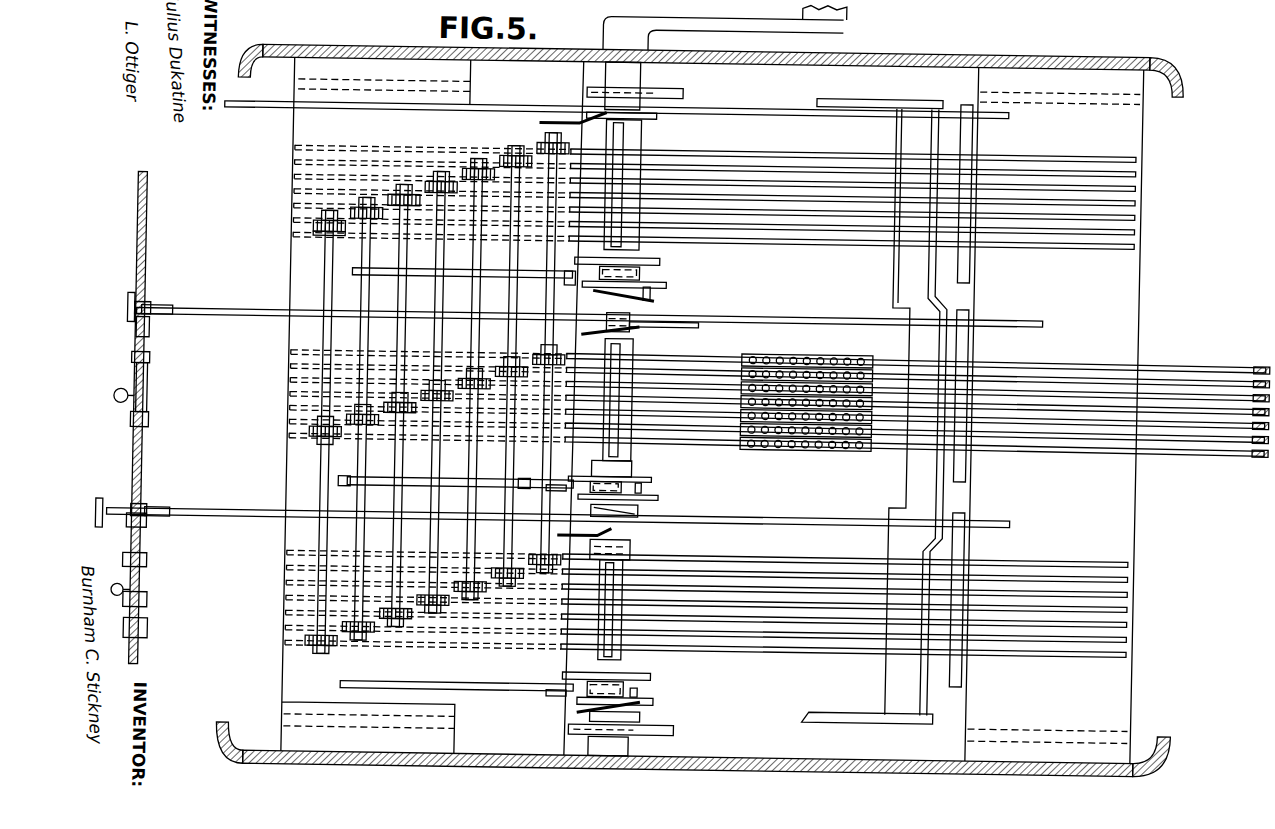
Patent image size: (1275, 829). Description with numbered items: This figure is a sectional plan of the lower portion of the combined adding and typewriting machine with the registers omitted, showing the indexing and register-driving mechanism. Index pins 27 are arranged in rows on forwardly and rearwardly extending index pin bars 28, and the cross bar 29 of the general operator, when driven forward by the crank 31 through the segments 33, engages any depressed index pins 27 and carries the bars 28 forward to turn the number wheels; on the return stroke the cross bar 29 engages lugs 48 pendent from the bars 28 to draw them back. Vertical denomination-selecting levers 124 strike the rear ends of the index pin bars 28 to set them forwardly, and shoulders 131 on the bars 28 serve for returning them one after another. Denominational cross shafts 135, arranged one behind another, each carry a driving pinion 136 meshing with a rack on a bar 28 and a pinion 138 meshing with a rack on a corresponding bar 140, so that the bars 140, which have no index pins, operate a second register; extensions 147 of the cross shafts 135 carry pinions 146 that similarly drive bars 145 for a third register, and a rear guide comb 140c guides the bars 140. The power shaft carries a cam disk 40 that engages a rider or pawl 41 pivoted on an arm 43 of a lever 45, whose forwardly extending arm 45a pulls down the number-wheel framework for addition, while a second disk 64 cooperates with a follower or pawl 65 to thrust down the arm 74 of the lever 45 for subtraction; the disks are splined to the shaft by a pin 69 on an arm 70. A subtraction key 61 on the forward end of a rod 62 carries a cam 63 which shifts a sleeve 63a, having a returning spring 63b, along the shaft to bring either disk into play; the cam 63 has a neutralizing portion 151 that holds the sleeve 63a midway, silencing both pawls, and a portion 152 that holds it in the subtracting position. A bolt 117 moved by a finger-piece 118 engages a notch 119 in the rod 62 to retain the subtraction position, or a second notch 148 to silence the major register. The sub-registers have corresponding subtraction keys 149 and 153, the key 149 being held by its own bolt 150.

The index pins 27 is at (776, 370).
The index pin bars 28 is at (290, 413).
The cross bar 29 is at (873, 416).
The crank 31 is at (838, 18).
The segments 33 is at (678, 92).
The cam disk 40 is at (664, 286).
The rider or pawl 41 is at (568, 287).
The arm 43 is at (530, 490).
The lever 45 is at (462, 281).
The forwardly extending arm 45a is at (348, 490).
The lugs 48 is at (955, 350).
The subtraction key 61 is at (126, 314).
The rod or bar 62 is at (240, 316).
The cam 63 is at (540, 125).
The sleeve 63a is at (633, 350).
The returning spring 63b is at (560, 735).
The second cam disk 64 is at (658, 260).
The follower or pawl 65 is at (640, 274).
The pin 69 is at (644, 489).
The arm 70 is at (641, 510).
The arm 74 is at (594, 473).
The bolt 117 is at (147, 386).
The finger-piece 118 is at (114, 410).
The notch 119 is at (152, 312).
The vertical levers 124 is at (1260, 438).
The shoulders 131 is at (926, 440).
The cross shafts 135 is at (544, 240).
The driving pinion 136 is at (348, 442).
The pinion 138 is at (348, 237).
The bars 140 is at (814, 228).
The rear guide comb 140c is at (968, 300).
The bars 145 is at (788, 640).
The pinions 146 is at (345, 645).
The extensions 147 is at (331, 538).
The second notch 148 is at (170, 322).
The subtraction key 149 is at (101, 536).
The bolt 150 is at (149, 530).
The neutralizing surface 151 is at (596, 120).
The cam portion 152 is at (552, 120).
The subtraction key 153 is at (258, 114).